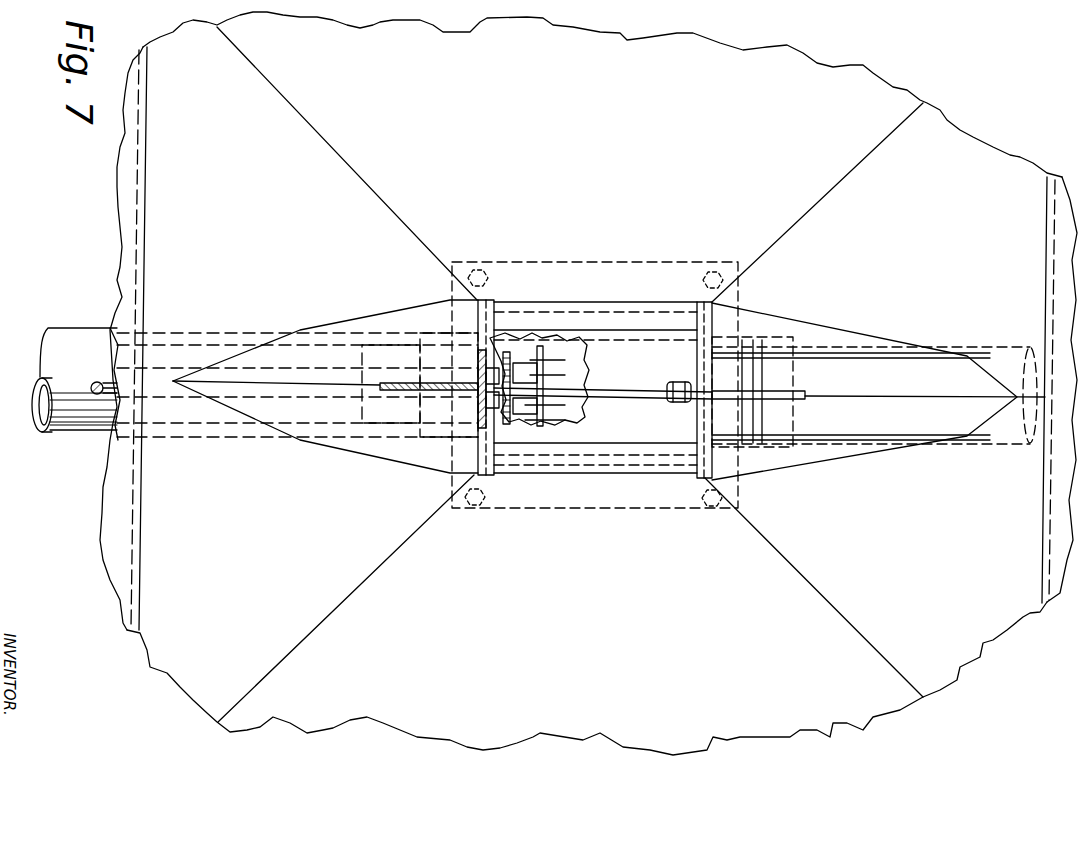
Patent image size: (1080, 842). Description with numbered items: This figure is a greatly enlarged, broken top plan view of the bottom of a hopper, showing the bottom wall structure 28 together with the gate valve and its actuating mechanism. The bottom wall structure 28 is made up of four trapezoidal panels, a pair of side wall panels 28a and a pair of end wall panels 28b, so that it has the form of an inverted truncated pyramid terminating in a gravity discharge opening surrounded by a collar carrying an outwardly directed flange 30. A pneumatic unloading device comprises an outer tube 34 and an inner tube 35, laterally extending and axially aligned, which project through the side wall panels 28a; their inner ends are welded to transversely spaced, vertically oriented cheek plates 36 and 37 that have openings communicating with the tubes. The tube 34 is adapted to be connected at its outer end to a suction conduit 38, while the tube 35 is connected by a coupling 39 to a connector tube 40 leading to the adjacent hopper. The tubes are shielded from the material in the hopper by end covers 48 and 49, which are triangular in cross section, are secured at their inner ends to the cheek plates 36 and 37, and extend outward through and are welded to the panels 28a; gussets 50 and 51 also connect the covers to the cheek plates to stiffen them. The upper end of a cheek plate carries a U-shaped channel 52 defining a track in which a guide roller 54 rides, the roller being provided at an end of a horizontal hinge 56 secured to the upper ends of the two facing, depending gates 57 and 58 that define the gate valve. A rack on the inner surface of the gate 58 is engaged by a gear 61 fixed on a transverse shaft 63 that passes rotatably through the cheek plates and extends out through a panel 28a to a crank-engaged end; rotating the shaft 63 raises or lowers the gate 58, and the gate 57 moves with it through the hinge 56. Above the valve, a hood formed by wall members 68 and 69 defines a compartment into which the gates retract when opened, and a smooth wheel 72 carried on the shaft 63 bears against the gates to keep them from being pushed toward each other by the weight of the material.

The bottom wall structure 28 is at (424, 712).
The side wall panels 28a is at (253, 222).
The end wall panels 28b is at (627, 117).
The flange 30 is at (517, 507).
The outer tube 34 is at (440, 430).
The inner tube 35 is at (742, 340).
The cheek plate 36 is at (478, 358).
The cheek plate 37 is at (703, 362).
The suction conduit 38 is at (90, 430).
The coupling 39 is at (758, 447).
The connector tube 40 is at (857, 445).
The end cover 48 is at (360, 460).
The end cover 49 is at (930, 413).
The gusset 50 is at (388, 383).
The gusset 51 is at (803, 397).
The U-shaped channel 52 is at (478, 411).
The guide roller 54 is at (478, 379).
The hinge 56 is at (566, 384).
The gate 57 is at (553, 428).
The gate 58 is at (620, 318).
The gear 61 is at (523, 430).
The shaft 63 is at (100, 380).
The wall member 68 is at (645, 420).
The wall member 69 is at (643, 384).
The wheel 72 is at (532, 344).